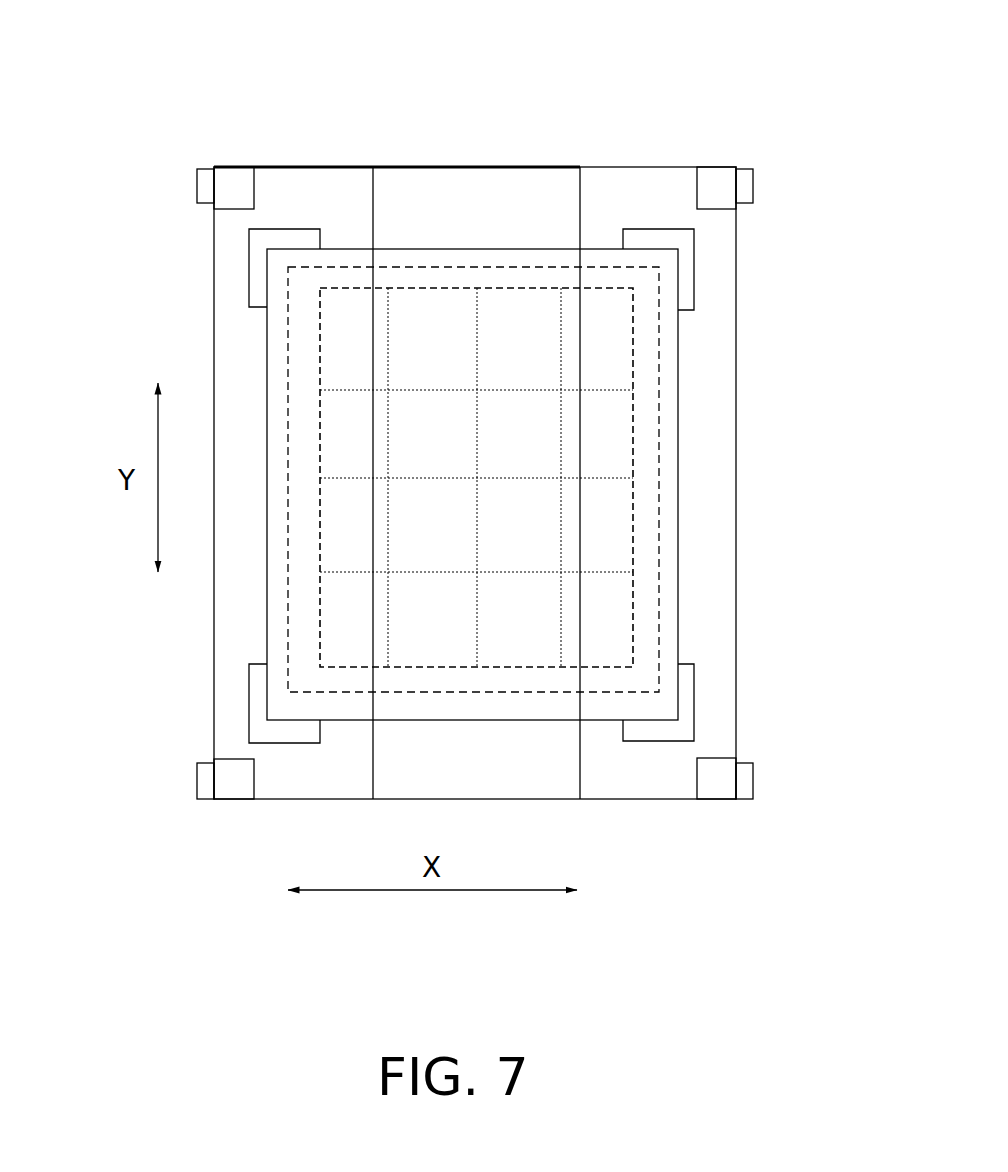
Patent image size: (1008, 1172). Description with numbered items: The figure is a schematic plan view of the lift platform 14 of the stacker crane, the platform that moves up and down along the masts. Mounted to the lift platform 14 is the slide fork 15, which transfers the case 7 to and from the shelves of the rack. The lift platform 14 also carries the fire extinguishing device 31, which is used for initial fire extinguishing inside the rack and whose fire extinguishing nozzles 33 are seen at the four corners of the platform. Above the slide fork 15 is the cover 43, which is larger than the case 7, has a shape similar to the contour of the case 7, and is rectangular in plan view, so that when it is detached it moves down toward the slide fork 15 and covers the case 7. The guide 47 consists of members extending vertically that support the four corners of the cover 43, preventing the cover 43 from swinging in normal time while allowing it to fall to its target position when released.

The lift platform 14 is at (462, 402).
The slide fork 15 is at (413, 207).
The fire extinguishing device 31 is at (778, 158).
The fire extinguishing nozzle 33 is at (198, 192).
The guide 47 is at (250, 265).
The cover 43 is at (683, 403).
The case 7 is at (638, 517).